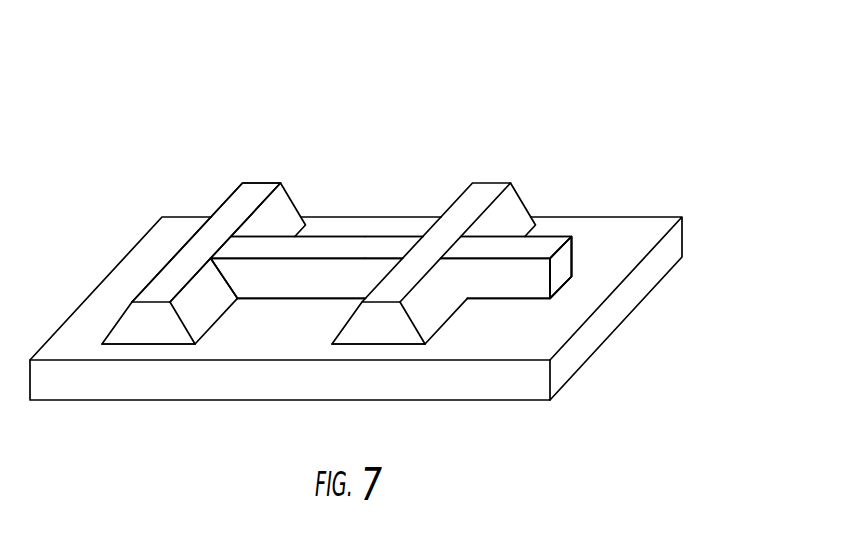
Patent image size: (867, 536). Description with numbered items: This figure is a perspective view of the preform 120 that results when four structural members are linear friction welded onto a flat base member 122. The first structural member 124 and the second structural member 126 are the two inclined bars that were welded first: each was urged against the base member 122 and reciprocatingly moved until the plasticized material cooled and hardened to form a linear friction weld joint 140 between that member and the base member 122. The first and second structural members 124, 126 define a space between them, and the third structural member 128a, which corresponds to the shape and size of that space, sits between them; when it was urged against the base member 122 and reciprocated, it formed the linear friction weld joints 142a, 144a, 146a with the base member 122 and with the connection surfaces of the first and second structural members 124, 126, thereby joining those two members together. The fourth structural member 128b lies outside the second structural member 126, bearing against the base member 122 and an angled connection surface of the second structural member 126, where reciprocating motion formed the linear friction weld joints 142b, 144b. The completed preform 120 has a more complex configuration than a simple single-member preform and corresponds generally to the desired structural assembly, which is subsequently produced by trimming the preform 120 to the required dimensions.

The preform 120 is at (682, 113).
The base member 122 is at (575, 355).
The first structural member 124 is at (163, 277).
The second structural member 126 is at (485, 183).
The third structural member 128a is at (317, 250).
The fourth structural member 128b is at (552, 242).
The linear friction weld joint 140 is at (130, 345).
The linear friction weld joint 142a is at (275, 300).
The linear friction weld joint 142b is at (560, 289).
The linear friction weld joint 144a is at (223, 240).
The linear friction weld joint 144b is at (460, 240).
The linear friction weld joint 146a is at (408, 240).